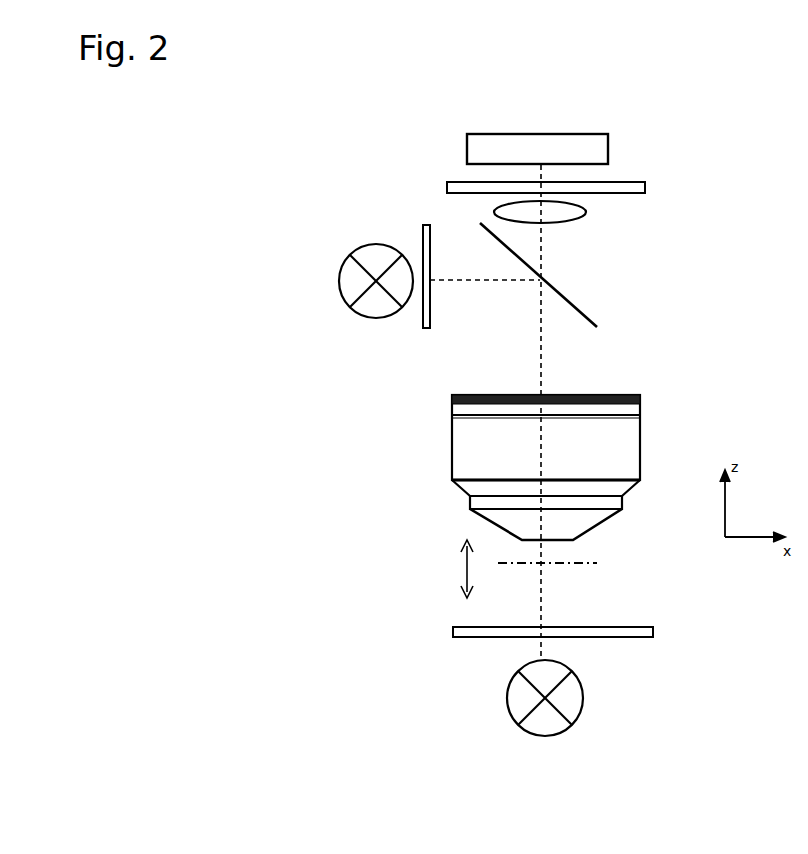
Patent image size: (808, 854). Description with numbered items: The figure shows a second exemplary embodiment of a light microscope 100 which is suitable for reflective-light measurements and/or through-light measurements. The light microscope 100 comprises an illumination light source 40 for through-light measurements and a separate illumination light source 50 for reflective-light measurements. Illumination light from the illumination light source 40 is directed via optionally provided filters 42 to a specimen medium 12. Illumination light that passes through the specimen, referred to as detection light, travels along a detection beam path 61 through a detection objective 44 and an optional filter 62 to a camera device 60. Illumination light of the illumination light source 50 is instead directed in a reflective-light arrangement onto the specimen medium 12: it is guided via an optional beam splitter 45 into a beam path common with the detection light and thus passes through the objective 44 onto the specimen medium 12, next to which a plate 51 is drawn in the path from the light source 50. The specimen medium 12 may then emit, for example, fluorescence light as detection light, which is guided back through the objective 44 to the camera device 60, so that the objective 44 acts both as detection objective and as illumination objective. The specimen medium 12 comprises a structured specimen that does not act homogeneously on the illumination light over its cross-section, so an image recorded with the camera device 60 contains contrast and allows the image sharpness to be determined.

The light microscope 100 is at (196, 747).
The camera device 60 is at (467, 143).
The filter 62 is at (645, 187).
The detection beam path 61 is at (543, 241).
The beam splitter 45 is at (583, 310).
The illumination light source 50 is at (339, 281).
The filter / diffuser plate 51 is at (482, 283).
The detection objective 44 is at (452, 445).
The specimen medium 12 is at (597, 563).
The filters 42 is at (453, 632).
The illumination light source 40 is at (508, 698).